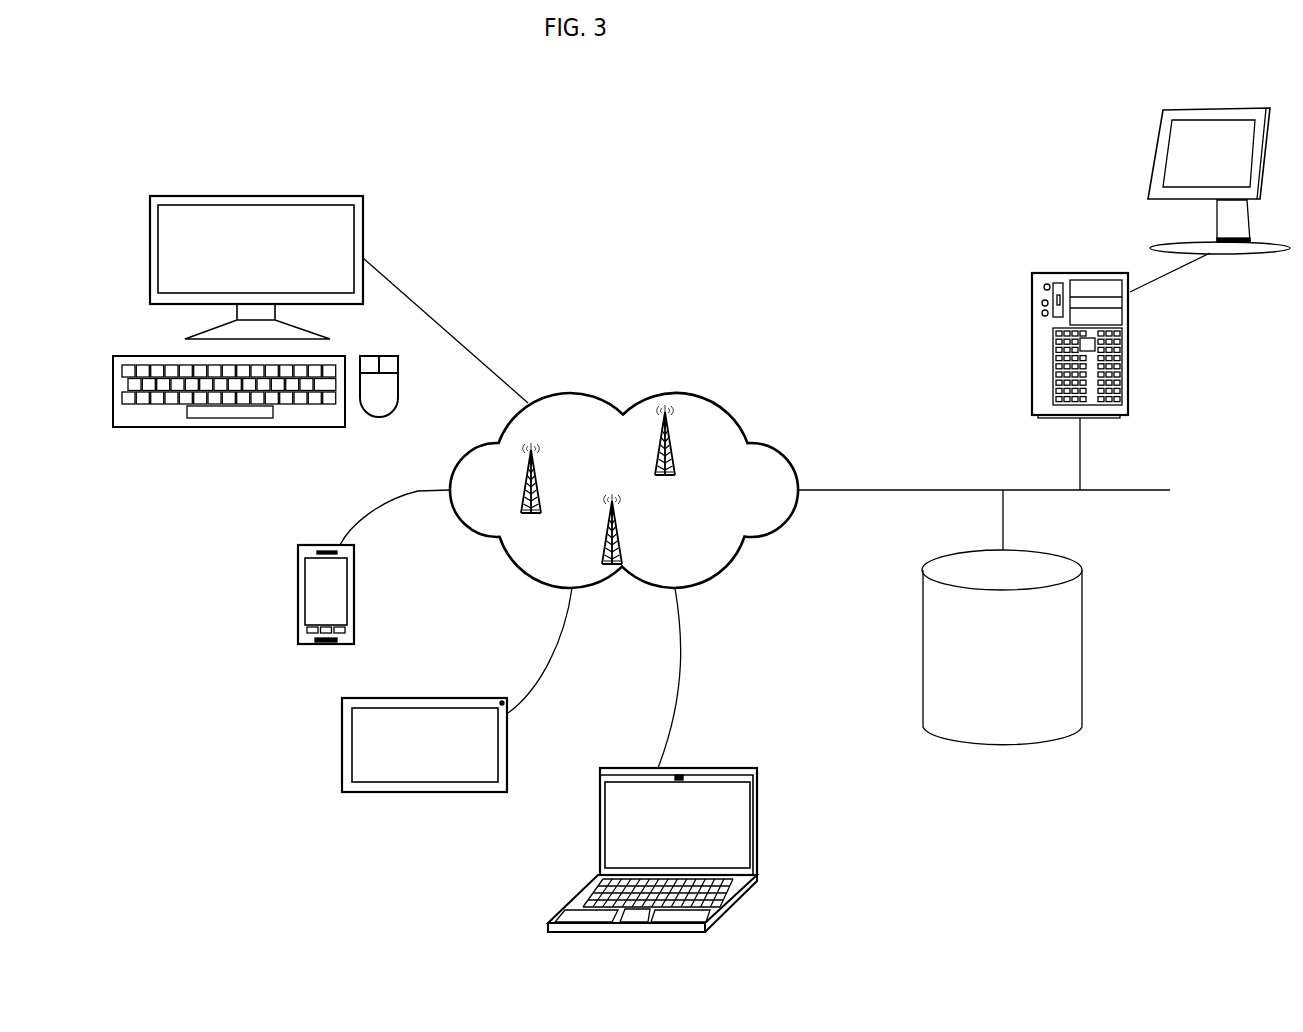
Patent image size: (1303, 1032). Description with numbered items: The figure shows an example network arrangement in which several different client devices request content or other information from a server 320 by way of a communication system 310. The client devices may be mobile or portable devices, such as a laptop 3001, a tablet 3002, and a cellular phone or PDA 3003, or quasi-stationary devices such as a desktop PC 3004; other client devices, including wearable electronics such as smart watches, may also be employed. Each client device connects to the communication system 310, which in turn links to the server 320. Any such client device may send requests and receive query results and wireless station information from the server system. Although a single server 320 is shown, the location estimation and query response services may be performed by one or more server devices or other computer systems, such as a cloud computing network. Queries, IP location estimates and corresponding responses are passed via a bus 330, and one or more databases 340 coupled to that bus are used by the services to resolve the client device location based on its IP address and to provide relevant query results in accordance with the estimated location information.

The laptop client device 3001 is at (598, 830).
The tablet client device 3002 is at (342, 740).
The cellular phone or PDA client device 3003 is at (298, 592).
The desktop PC client device 3004 is at (363, 215).
The communication system 310 is at (608, 398).
The server 320 is at (1128, 350).
The bus 330 is at (1170, 490).
The databases 340 is at (1082, 658).